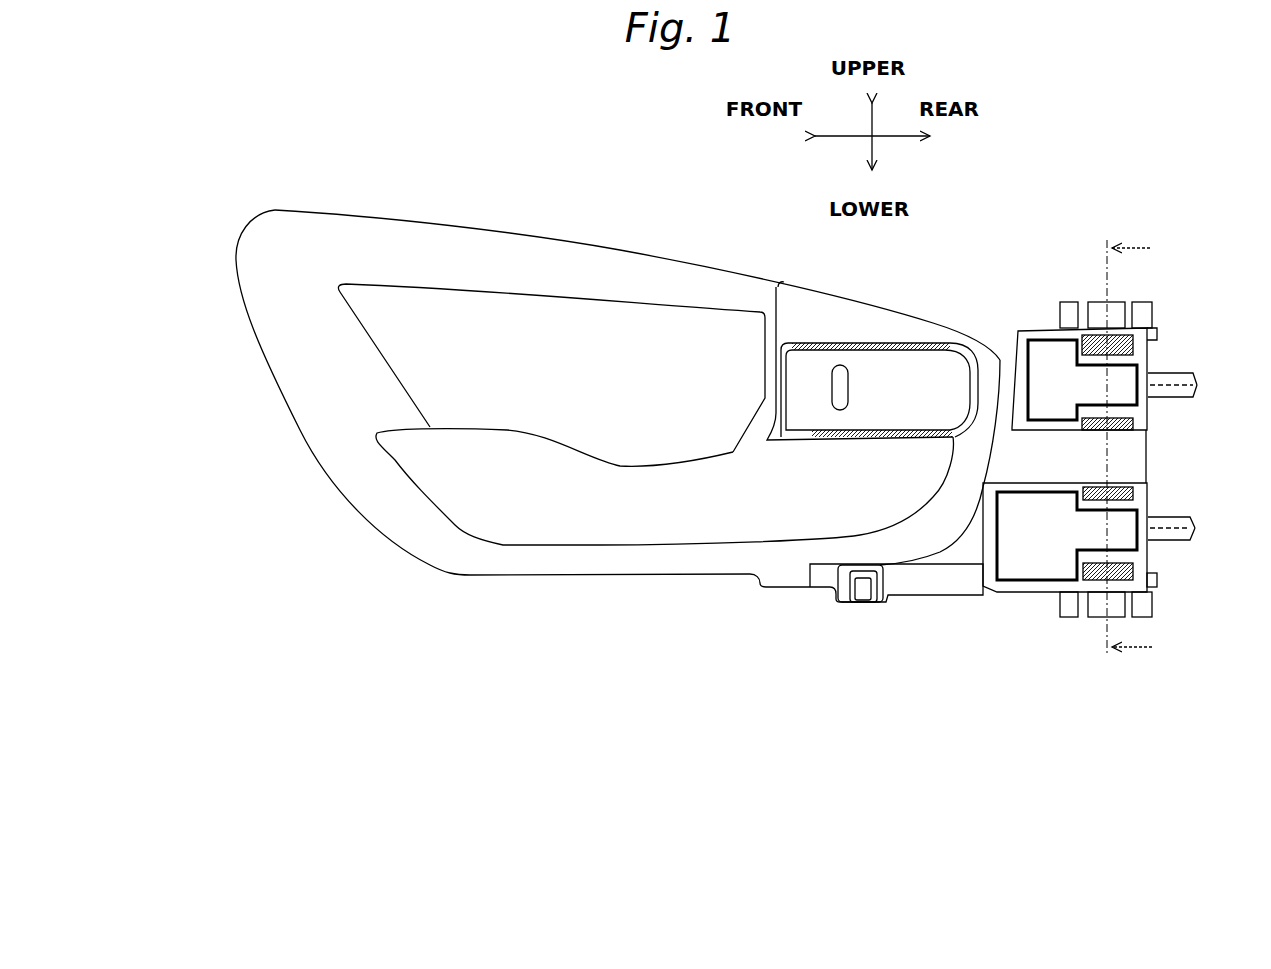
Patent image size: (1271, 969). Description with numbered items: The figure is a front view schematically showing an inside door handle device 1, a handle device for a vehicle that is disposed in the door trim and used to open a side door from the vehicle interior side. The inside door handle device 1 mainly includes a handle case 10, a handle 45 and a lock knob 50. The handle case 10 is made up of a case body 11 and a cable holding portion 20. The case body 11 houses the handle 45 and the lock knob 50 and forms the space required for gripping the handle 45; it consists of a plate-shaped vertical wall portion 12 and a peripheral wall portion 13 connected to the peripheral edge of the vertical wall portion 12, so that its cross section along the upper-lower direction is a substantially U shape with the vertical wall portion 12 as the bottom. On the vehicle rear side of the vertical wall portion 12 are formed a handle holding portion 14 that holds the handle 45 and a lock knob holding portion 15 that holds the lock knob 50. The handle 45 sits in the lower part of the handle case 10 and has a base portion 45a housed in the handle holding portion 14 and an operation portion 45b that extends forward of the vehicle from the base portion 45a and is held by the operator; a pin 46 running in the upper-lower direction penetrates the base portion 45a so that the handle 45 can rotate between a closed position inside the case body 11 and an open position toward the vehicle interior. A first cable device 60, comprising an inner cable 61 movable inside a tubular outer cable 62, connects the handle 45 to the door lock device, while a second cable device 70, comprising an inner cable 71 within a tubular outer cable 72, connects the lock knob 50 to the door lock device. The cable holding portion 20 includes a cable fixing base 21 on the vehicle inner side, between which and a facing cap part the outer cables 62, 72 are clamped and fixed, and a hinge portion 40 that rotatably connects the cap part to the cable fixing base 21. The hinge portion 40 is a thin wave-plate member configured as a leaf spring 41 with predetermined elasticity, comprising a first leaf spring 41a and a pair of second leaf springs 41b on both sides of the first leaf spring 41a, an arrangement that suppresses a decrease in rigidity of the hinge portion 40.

The inside door handle device 1 is at (657, 167).
The handle case 10 is at (1025, 173).
The case body 11 is at (737, 272).
The vertical wall portion 12 is at (525, 317).
The peripheral wall portion 13 is at (312, 352).
The handle holding portion 14 is at (910, 527).
The lock knob holding portion 15 is at (902, 342).
The cable holding portion 20 is at (1165, 333).
The cable fixing base 21 is at (1045, 367).
The hinge portion 40 is at (1038, 295).
The leaf spring 41 is at (1115, 446).
The first leaf spring 41a is at (1092, 660).
The second leaf spring 41b is at (1193, 640).
The handle 45 is at (537, 556).
The base portion 45a is at (827, 503).
The operation portion 45b is at (487, 500).
The pin 46 is at (847, 604).
The lock knob 50 is at (853, 367).
The first cable device 60 is at (1207, 510).
The inner cable 61 is at (1197, 535).
The outer cable 62 is at (1177, 517).
The second cable device 70 is at (1207, 363).
The inner cable 71 is at (1165, 398).
The outer cable 72 is at (1185, 373).